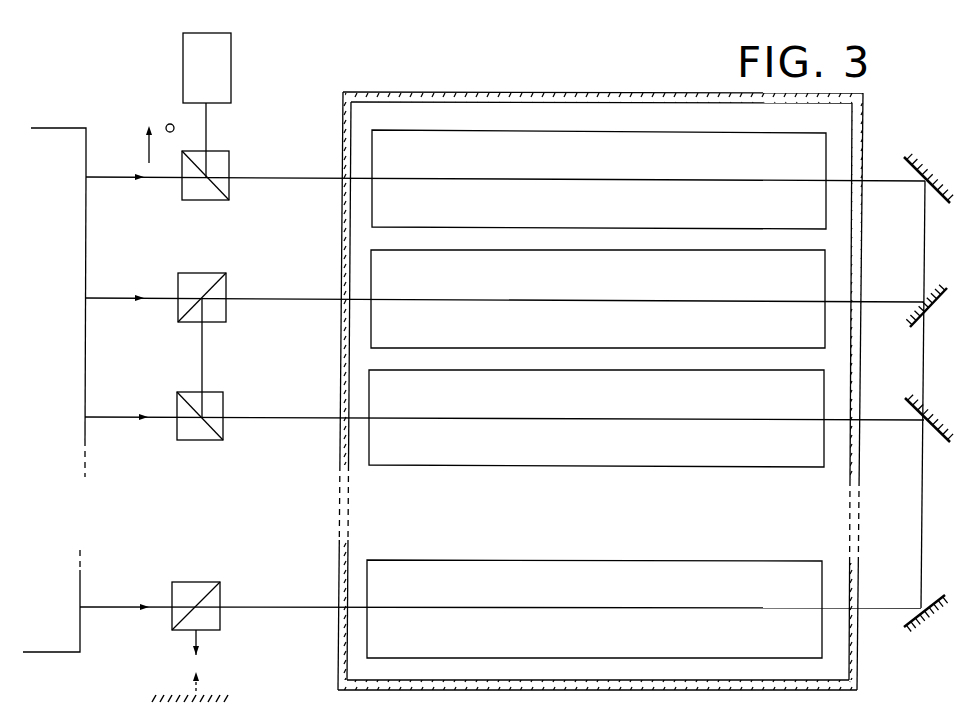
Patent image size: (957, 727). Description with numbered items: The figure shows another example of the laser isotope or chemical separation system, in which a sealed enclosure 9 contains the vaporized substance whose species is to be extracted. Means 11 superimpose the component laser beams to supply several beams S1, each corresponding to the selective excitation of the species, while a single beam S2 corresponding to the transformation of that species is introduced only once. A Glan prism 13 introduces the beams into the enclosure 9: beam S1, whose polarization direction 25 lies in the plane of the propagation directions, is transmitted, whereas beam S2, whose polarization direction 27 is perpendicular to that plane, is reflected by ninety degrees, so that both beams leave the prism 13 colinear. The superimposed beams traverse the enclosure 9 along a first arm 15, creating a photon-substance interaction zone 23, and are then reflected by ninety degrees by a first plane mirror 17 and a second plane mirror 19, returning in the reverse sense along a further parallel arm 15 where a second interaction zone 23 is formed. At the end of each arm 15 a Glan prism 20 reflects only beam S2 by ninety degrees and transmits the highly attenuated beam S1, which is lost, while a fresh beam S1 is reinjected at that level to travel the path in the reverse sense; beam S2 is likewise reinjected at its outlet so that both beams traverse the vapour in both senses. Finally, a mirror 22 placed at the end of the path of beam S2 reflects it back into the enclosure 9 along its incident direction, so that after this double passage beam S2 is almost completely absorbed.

The sealed enclosure 9 is at (468, 92).
The superimposing means 11 is at (64, 136).
The Glan prism 13 is at (230, 160).
The arm 15 is at (884, 181).
The first plane mirror 17 is at (904, 157).
The second plane mirror 19 is at (910, 327).
The Glan prism 20 is at (227, 283).
The mirror 22 is at (172, 693).
The interaction zone 23 is at (628, 210).
The polarization direction 25 is at (147, 148).
The polarization direction 27 is at (168, 123).
The beam S1 is at (110, 180).
The beam S2 is at (223, 72).